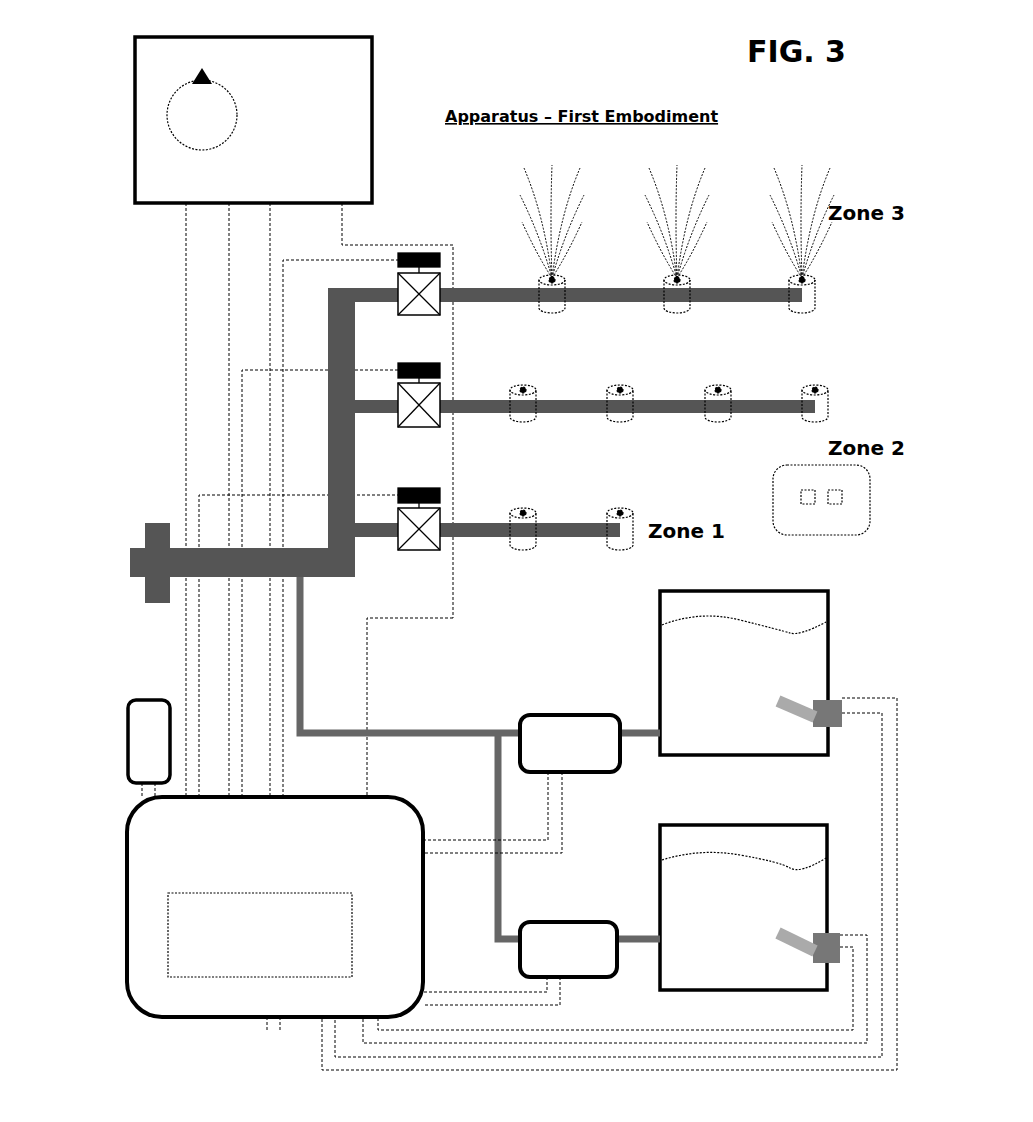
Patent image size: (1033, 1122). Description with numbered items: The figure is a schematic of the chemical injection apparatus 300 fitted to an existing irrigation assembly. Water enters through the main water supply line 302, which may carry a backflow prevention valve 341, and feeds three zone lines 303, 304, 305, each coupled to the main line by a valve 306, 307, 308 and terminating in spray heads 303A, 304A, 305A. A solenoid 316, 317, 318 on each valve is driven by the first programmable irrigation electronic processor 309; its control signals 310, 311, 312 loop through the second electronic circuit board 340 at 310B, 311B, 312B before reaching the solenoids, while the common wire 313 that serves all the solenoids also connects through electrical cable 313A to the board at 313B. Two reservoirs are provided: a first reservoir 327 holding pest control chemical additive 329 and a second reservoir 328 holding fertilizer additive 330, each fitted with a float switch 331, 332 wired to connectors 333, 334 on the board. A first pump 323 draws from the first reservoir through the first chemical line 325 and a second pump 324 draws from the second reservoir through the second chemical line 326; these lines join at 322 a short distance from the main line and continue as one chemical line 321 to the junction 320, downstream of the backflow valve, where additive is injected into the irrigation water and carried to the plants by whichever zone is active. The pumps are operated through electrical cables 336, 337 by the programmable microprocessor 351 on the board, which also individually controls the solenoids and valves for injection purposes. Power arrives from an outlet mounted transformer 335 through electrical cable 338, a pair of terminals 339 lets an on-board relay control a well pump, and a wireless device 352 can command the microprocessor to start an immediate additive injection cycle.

The apparatus first embodiment 300 is at (831, 122).
The main water supply line 302 is at (132, 545).
The zone line 303 is at (575, 540).
The spray heads 303A is at (532, 513).
The zone line 304 is at (578, 415).
The spray heads 304A is at (532, 390).
The zone line 305 is at (628, 305).
The spray heads 305A is at (560, 280).
The valve 306 is at (437, 552).
The valve 307 is at (437, 427).
The valve 308 is at (437, 310).
The first programmable irrigation electronic processor 309 is at (372, 102).
The control signal 310 is at (186, 203).
The control signal 311 is at (229, 203).
The control signal 312 is at (270, 203).
The common wire 313 is at (342, 203).
The electrical cable 313A is at (455, 605).
The solenoid 316 is at (440, 490).
The solenoid 317 is at (440, 367).
The solenoid 318 is at (437, 253).
The junction 320 is at (305, 578).
The chemical line 321 is at (433, 728).
The joining point 322 is at (493, 730).
The first pump 323 is at (588, 715).
The second pump 324 is at (588, 922).
The first chemical line 325 is at (512, 730).
The second chemical line 326 is at (494, 794).
The first reservoir 327 is at (828, 593).
The second reservoir 328 is at (810, 825).
The chemical additive 329 is at (705, 668).
The chemical additive 330 is at (700, 898).
The float switch 331 is at (830, 700).
The float switch 332 is at (830, 935).
The connectors 333 is at (322, 1016).
The connectors 334 is at (358, 1016).
The outlet mounted transformer 335 is at (150, 700).
The electrical cable 336 is at (421, 852).
The electrical cable 337 is at (410, 1008).
The electrical cable 338 is at (144, 800).
The pair of terminals 339 is at (266, 1032).
The second electronic circuit board 340 is at (192, 1020).
The backflow prevention valve 341 is at (168, 600).
The programmable microprocessor 351 is at (260, 935).
The wireless device 352 is at (773, 482).
The control signal loop connection 310B is at (188, 800).
The control signal loop connection 311B is at (232, 800).
The control signal loop connection 312B is at (272, 800).
The common wire connection 313B is at (368, 800).